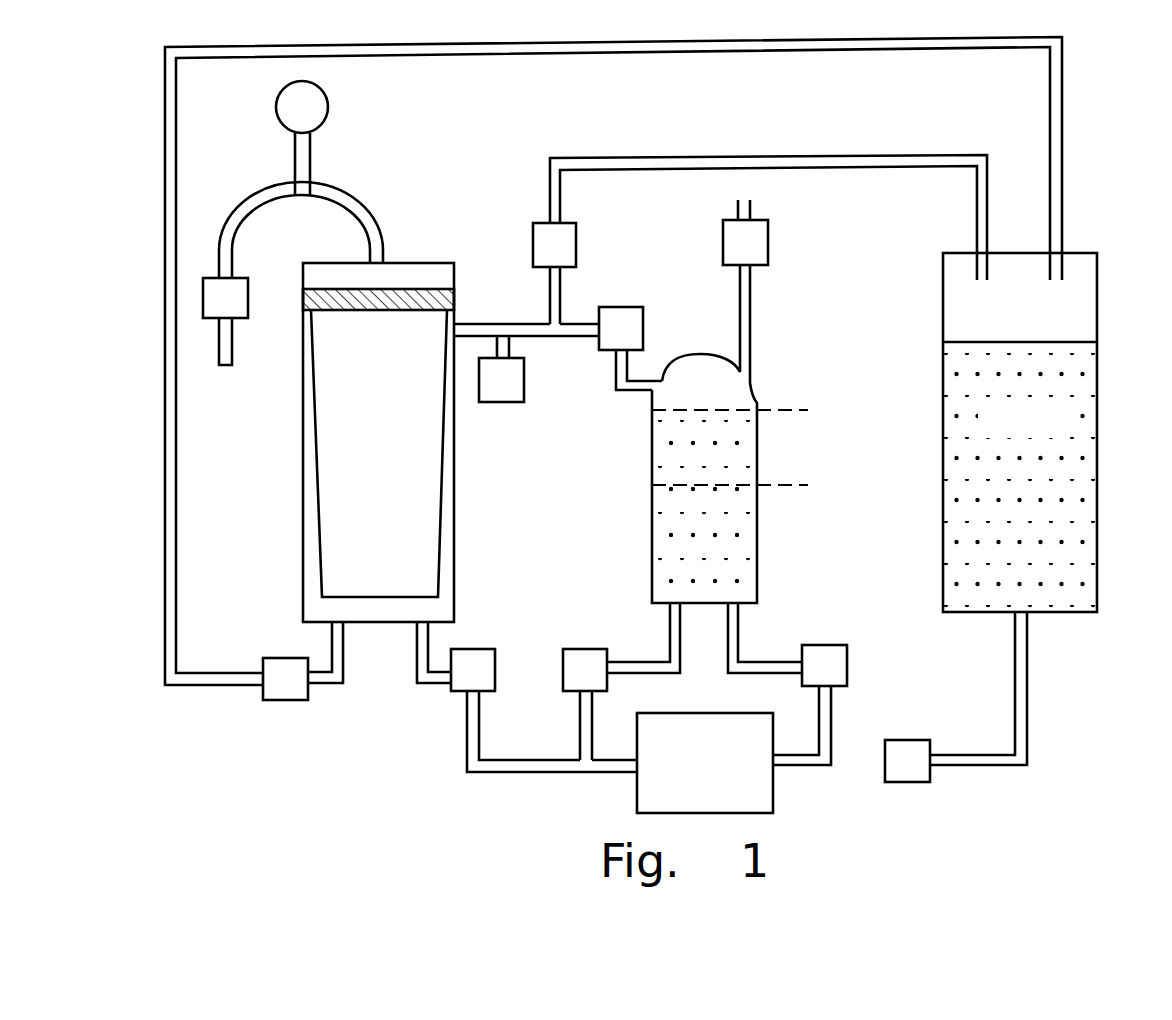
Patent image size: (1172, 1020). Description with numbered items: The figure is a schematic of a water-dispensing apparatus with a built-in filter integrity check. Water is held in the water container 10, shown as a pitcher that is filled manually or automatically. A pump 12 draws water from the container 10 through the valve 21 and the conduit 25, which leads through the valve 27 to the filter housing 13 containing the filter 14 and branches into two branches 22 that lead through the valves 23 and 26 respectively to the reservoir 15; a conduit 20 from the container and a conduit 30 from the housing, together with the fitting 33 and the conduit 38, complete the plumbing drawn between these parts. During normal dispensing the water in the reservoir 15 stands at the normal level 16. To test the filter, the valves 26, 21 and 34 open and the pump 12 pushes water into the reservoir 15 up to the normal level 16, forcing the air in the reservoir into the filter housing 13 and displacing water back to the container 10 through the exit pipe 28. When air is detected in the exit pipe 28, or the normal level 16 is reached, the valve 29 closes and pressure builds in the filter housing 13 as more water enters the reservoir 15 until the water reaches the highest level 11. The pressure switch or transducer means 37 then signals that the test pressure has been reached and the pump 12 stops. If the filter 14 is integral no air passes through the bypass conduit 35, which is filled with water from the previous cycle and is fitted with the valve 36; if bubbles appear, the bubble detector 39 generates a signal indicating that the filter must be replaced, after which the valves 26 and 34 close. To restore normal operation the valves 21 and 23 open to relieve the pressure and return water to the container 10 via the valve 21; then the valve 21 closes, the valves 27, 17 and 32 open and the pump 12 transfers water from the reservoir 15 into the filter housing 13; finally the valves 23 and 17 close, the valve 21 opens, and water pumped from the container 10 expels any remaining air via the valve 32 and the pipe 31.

The water container 10 is at (1096, 491).
The highest water level 11 is at (750, 405).
The pump 12 is at (640, 780).
The filter housing 13 is at (303, 548).
The filter 14 is at (336, 477).
The reservoir 15 is at (742, 572).
The normal water level 16 is at (750, 483).
The valve 17 is at (768, 236).
The pitcher outlet conduit 20 is at (1022, 730).
The valve 21 is at (912, 775).
The branches 22 is at (828, 731).
The valve 23 is at (830, 655).
The conduit 25 is at (518, 765).
The valve 26 is at (590, 656).
The valve 27 is at (480, 667).
The exit pipe 28 is at (165, 415).
The valve 29 is at (286, 692).
The conduit 30 is at (500, 322).
The pipe 31 is at (550, 208).
The valve 32 is at (568, 242).
The conduit 33 is at (640, 388).
The valve 34 is at (635, 312).
The bypass conduit 35 is at (345, 190).
The valve 36 is at (238, 331).
The pressure switch or transducer means 37 is at (503, 390).
The conduit 38 is at (578, 330).
The bubble detector 39 is at (328, 110).